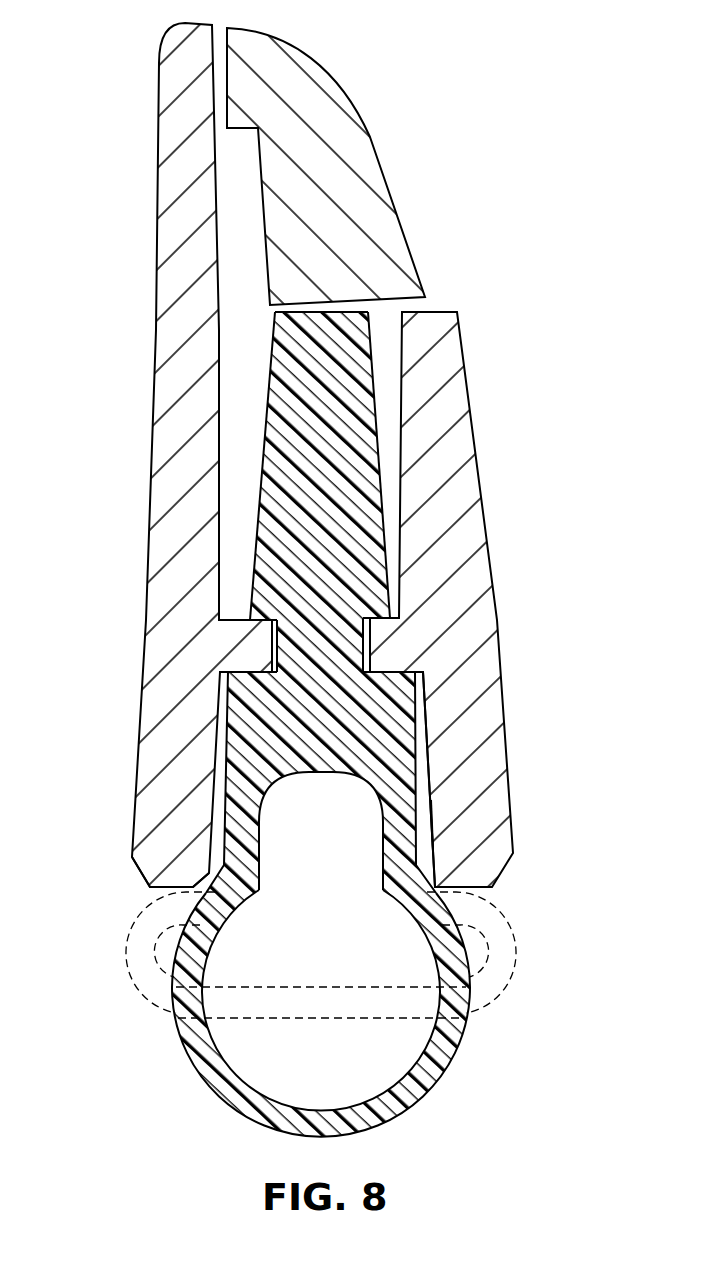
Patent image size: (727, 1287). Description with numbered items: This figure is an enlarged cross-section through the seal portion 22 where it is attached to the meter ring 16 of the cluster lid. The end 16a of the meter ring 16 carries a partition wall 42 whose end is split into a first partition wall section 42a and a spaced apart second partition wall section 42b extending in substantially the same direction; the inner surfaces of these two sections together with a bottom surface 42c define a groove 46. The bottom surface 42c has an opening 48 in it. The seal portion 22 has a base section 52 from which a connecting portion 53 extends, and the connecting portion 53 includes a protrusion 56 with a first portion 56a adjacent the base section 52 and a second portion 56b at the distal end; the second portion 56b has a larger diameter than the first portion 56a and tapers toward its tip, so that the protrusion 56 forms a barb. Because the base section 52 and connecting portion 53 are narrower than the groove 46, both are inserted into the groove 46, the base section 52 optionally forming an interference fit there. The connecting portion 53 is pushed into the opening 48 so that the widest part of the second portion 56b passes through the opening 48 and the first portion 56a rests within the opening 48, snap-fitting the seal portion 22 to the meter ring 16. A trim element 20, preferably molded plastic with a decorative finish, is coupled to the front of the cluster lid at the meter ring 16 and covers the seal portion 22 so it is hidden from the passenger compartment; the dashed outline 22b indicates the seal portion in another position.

The meter ring 16 is at (169, 465).
The end of the meter ring 16a is at (150, 887).
The trim element 20 is at (383, 157).
The seal portion 22 is at (351, 904).
The compressed bulb position (phantom) 22b is at (507, 922).
The partition wall 42 is at (324, 465).
The first partition wall section 42a is at (489, 599).
The second partition wall section 42b is at (162, 465).
The bottom surface 42c is at (404, 686).
The groove 46 is at (433, 810).
The opening 48 is at (370, 640).
The base section 52 is at (392, 752).
The connecting portion 53 is at (255, 538).
The protrusion 56 is at (322, 496).
The first portion 56a is at (273, 645).
The second portion 56b is at (373, 398).